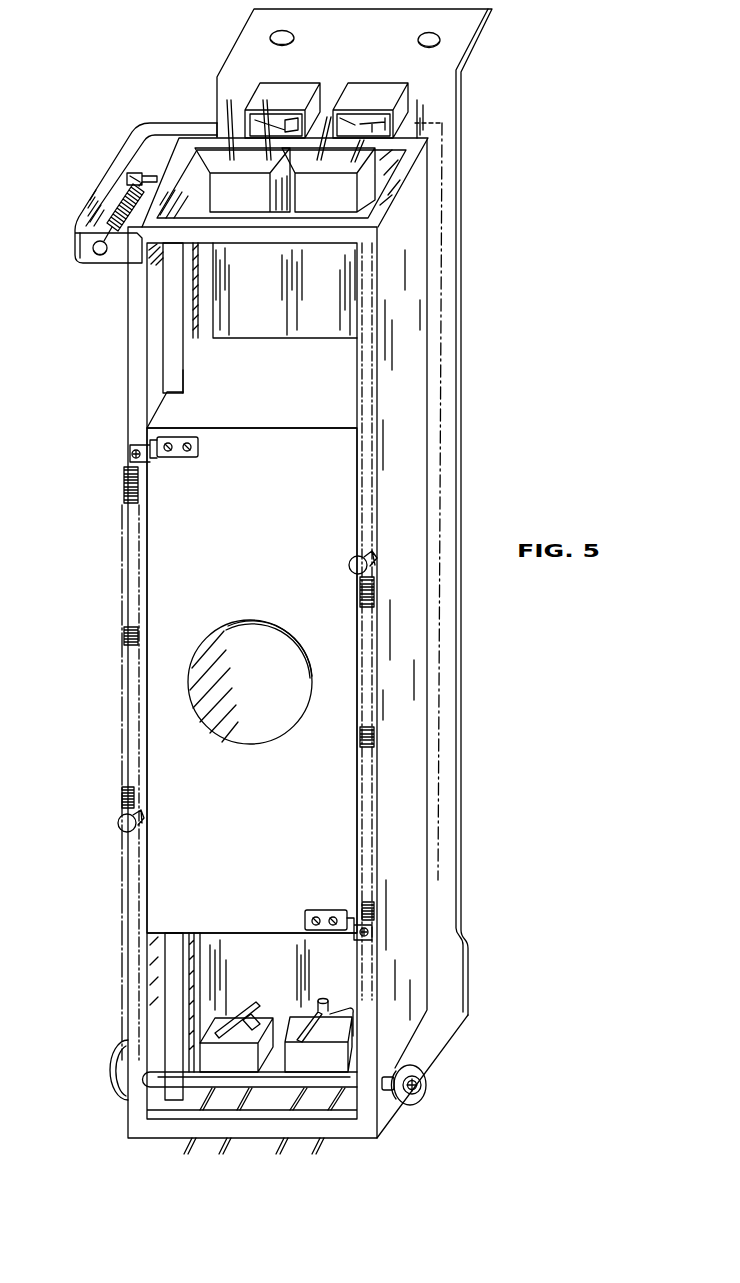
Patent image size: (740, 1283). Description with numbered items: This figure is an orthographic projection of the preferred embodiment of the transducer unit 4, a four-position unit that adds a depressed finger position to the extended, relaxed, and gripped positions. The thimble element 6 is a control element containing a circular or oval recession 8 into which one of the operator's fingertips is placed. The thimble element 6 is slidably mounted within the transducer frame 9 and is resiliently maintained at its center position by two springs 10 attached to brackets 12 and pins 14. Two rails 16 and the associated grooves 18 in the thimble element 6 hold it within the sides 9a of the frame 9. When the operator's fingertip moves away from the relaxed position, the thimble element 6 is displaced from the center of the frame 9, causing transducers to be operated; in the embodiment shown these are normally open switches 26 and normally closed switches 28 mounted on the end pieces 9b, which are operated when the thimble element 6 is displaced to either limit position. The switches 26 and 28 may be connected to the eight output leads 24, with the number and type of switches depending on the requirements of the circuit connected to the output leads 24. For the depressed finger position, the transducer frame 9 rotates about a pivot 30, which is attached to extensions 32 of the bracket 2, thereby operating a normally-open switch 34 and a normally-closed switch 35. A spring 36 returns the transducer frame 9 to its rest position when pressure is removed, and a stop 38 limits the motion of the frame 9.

The bracket 2 is at (237, 52).
The transducer unit 4 is at (444, 202).
The thimble element 6 is at (163, 568).
The recession 8 is at (253, 743).
The transducer frame 9 is at (425, 385).
The sides 9a is at (408, 847).
The end pieces 9b is at (208, 158).
The springs 10 is at (122, 640).
The brackets 12 is at (131, 447).
The pins 14 is at (350, 567).
The rails 16 is at (378, 185).
The grooves 18 is at (187, 382).
The output leads 24 is at (222, 1150).
The normally open switches 26 is at (251, 204).
The normally closed switches 28 is at (337, 204).
The pivot 30 is at (422, 1082).
The extensions 32 is at (110, 1077).
The normally-open switch 34 is at (294, 106).
The normally-closed switch 35 is at (375, 107).
The spring 36 is at (113, 207).
The stop 38 is at (120, 257).